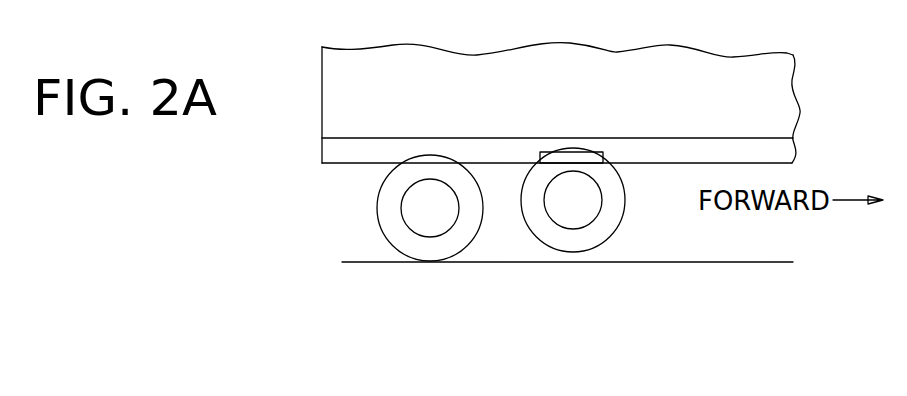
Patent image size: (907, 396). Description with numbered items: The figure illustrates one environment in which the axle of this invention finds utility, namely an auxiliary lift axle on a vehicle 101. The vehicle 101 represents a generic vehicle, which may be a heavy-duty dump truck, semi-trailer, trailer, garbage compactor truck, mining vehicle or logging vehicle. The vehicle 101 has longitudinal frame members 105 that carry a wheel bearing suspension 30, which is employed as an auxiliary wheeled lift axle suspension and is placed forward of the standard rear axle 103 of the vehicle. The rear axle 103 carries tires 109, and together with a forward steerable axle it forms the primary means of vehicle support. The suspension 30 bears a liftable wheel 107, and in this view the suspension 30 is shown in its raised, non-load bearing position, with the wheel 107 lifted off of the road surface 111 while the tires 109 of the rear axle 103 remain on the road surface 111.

The vehicle 101 is at (604, 98).
The longitudinal frame members 105 is at (787, 155).
The suspension 30 is at (540, 157).
The rear axle 103 is at (430, 212).
The tires 109 is at (427, 250).
The wheel 107 is at (580, 245).
The road surface 111 is at (752, 262).